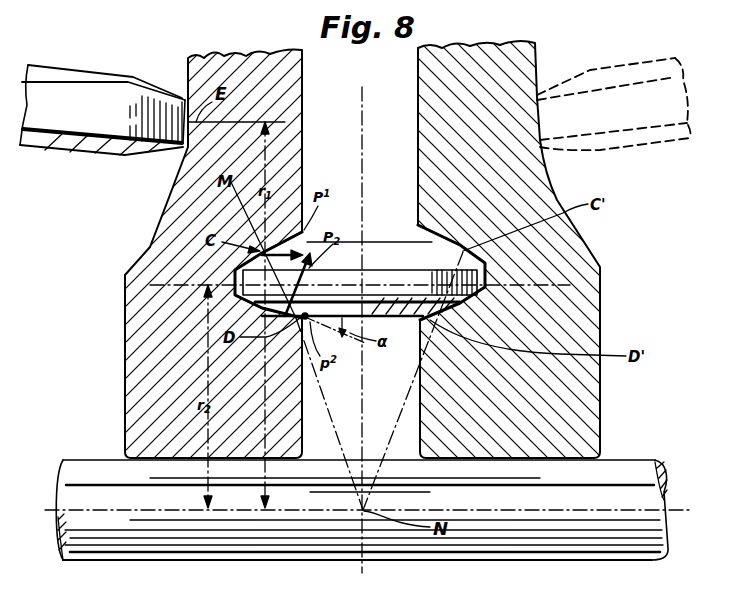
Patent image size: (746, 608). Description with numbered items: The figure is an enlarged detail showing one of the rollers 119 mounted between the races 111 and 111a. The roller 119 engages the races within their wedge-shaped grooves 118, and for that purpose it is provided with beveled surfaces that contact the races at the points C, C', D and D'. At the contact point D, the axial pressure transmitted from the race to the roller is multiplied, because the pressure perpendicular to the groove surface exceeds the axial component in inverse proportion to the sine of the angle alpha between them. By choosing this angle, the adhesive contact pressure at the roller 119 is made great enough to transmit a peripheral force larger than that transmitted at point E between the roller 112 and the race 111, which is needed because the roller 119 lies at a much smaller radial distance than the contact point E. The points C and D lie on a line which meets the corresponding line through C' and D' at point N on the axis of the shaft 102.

The shaft 102 is at (305, 533).
The race 111 is at (160, 262).
The race 111a is at (531, 249).
The roller 112 is at (76, 102).
The groove 118 is at (459, 242).
The roller 119 is at (393, 269).